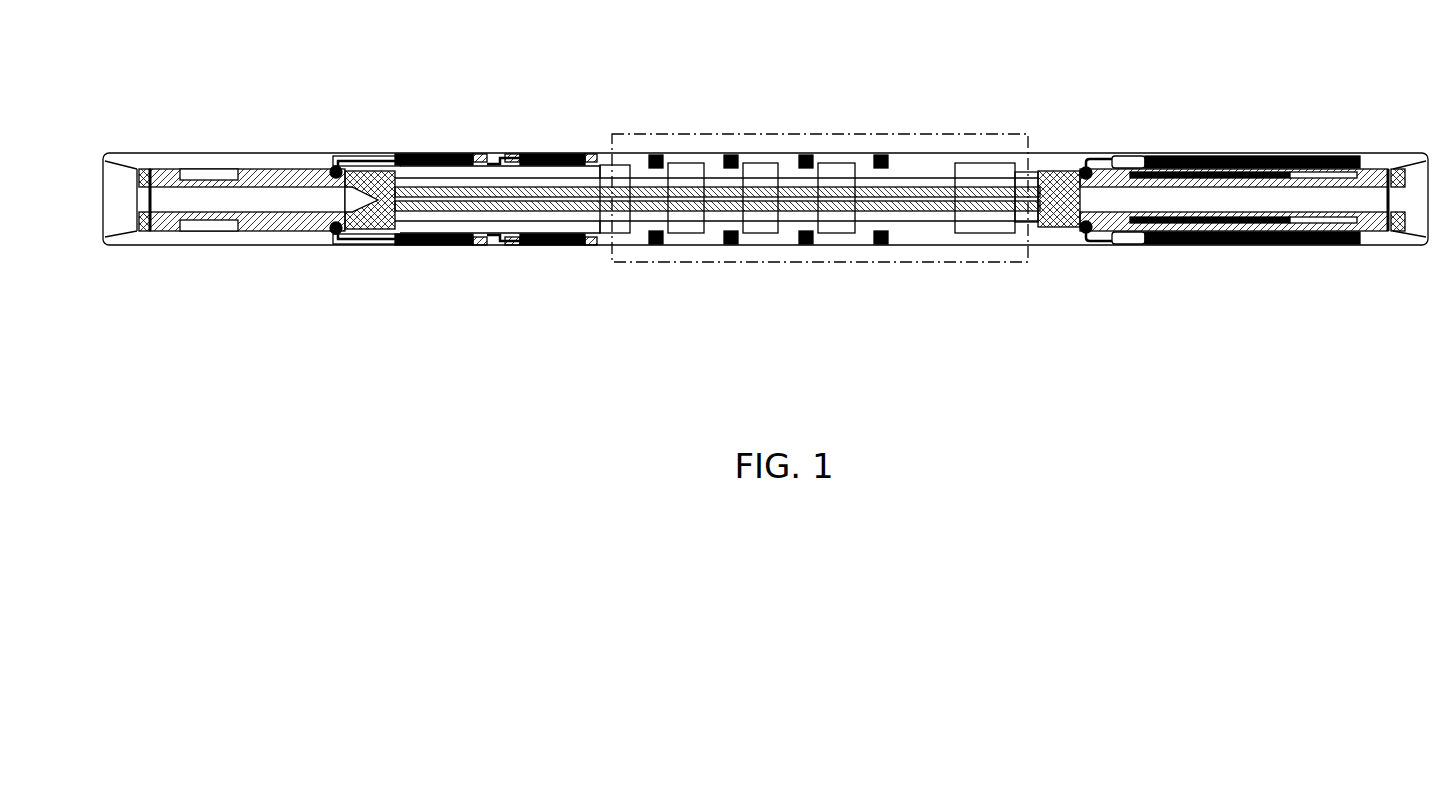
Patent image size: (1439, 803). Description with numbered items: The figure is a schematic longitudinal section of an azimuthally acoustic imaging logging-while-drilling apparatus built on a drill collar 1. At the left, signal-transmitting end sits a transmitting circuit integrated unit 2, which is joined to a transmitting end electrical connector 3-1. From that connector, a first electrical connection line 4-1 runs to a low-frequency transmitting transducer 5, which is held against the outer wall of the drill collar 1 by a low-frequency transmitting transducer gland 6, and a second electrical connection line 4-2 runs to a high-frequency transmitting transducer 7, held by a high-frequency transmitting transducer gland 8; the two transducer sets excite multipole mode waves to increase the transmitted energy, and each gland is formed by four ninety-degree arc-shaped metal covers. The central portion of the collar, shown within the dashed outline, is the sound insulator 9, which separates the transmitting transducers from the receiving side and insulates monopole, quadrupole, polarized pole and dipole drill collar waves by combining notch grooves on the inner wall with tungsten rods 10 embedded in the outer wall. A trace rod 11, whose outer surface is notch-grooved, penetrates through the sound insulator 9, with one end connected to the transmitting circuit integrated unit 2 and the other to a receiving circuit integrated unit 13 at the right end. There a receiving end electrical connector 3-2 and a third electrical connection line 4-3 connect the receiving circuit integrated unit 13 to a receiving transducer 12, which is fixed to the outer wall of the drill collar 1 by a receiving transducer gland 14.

The drill collar 1 is at (233, 165).
The transmitting circuit integrated unit 2 is at (300, 172).
The transmitting end electrical connector 3-1 is at (342, 167).
The first electrical connection line 4-1 is at (373, 163).
The low-frequency transmitting transducer 5 is at (440, 154).
The low-frequency transmitting transducer gland 6 is at (481, 155).
The second electrical connection line 4-2 is at (498, 158).
The high-frequency transmitting transducer 7 is at (548, 154).
The high-frequency transmitting transducer gland 8 is at (592, 153).
The sound insulator 9 is at (820, 136).
The tungsten rod 10 is at (885, 155).
The trace rod 11 is at (908, 188).
The receiving end electrical connector 3-2 is at (1084, 162).
The third electrical connection line 4-3 is at (1105, 158).
The receiving transducer 12 is at (1137, 158).
The receiving circuit integrated unit 13 is at (1188, 171).
The receiving transducer gland 14 is at (1240, 154).